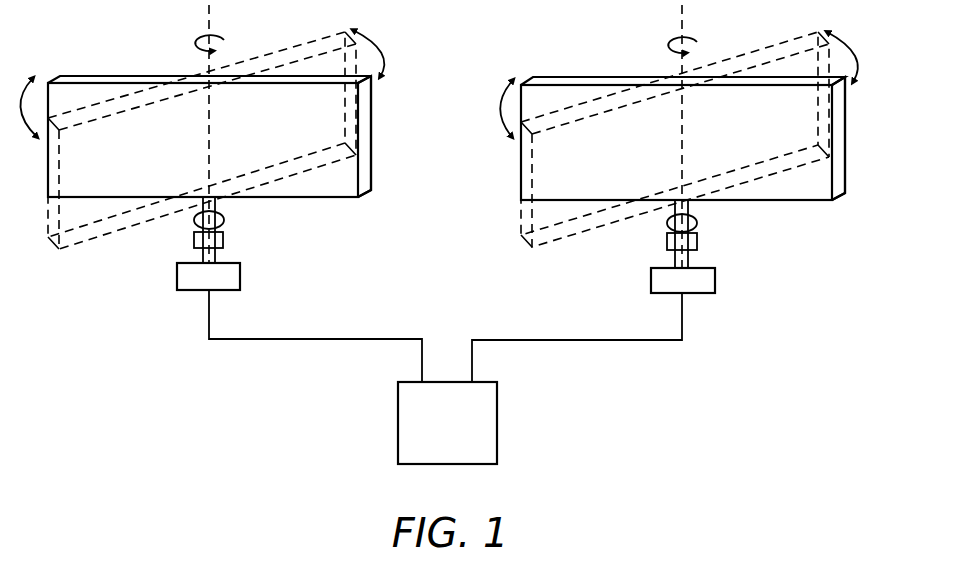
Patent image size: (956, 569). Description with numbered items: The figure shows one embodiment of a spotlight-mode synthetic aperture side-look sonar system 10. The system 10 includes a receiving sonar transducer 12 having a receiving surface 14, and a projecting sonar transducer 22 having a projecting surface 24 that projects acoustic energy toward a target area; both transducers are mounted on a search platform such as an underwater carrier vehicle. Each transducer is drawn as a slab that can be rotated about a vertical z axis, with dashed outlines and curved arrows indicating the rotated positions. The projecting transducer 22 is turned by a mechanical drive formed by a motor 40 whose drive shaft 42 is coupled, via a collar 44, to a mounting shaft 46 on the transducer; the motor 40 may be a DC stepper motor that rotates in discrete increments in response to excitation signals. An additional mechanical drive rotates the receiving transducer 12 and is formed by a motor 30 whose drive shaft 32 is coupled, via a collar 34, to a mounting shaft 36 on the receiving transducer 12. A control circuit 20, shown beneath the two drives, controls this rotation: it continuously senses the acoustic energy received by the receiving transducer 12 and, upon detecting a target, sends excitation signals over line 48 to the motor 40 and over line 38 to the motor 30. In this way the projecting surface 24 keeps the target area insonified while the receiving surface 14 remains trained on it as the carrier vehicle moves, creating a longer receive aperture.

The spotlight-mode synthetic aperture side-look sonar system 10 is at (83, 332).
The receiving sonar transducer 12 is at (128, 78).
The receiving surface 14 is at (347, 187).
The control circuit 20 is at (398, 418).
The projecting sonar transducer 22 is at (592, 80).
The projecting surface 24 is at (790, 192).
The motor 30 is at (188, 280).
The drive shaft 32 is at (217, 255).
The collar 34 is at (194, 240).
The mounting shaft 36 is at (223, 218).
The line 38 is at (327, 339).
The motor 40 is at (657, 278).
The drive shaft 42 is at (688, 260).
The collar 44 is at (667, 242).
The mounting shaft 46 is at (697, 227).
The line 48 is at (557, 340).